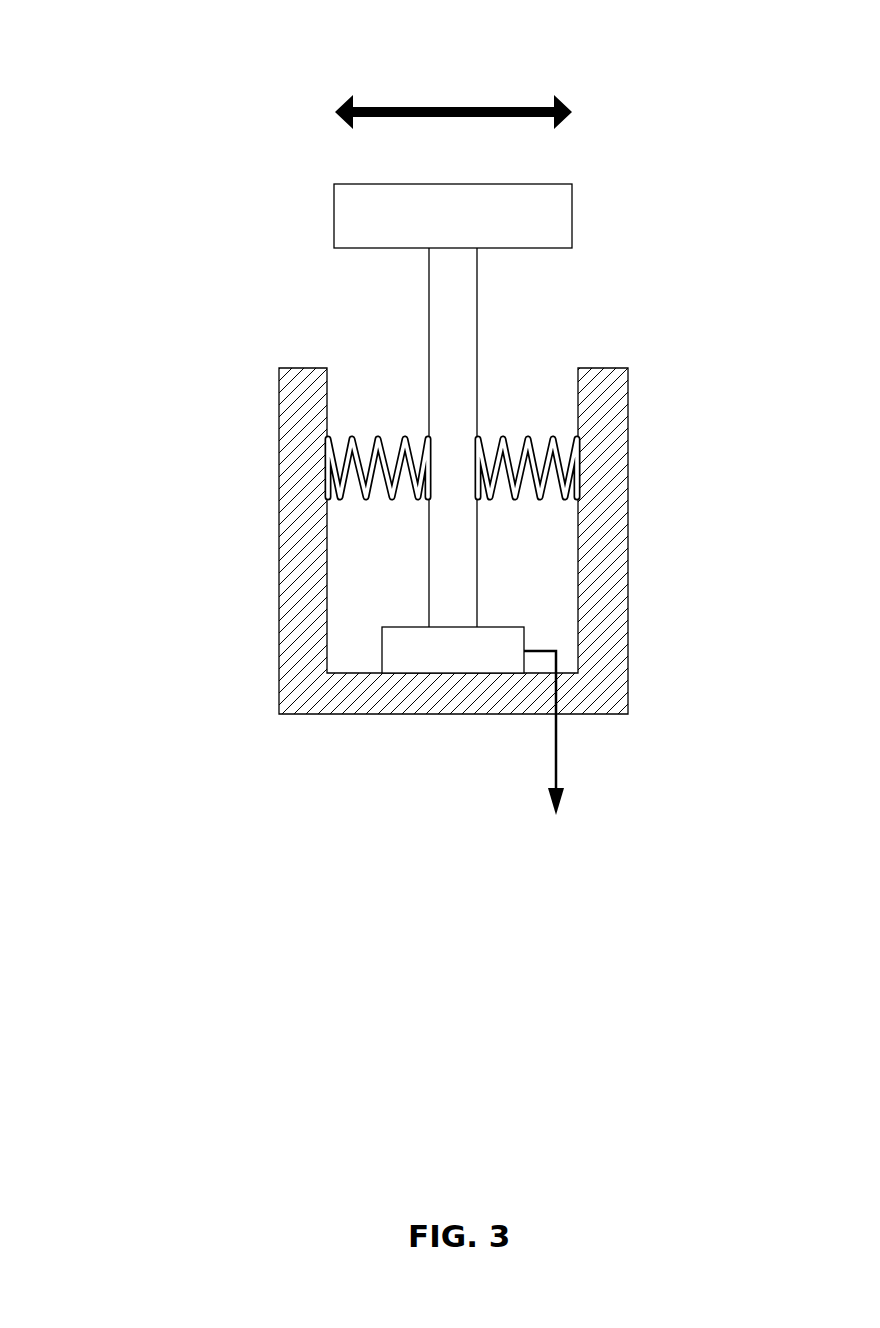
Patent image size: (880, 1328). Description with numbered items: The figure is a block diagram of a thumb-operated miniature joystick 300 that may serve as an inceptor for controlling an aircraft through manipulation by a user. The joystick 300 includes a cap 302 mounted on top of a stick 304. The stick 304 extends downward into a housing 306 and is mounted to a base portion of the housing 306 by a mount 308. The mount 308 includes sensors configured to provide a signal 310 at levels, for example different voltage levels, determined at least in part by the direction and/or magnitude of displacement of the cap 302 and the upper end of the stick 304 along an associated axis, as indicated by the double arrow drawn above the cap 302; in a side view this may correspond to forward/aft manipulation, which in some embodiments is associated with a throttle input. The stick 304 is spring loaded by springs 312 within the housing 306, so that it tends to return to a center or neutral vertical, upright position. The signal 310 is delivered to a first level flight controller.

The joystick 300 is at (143, 38).
The cap 302 is at (572, 220).
The stick 304 is at (477, 332).
The housing 306 is at (628, 418).
The mount 308 is at (413, 626).
The signal 310 is at (557, 756).
The springs 312 is at (405, 438).